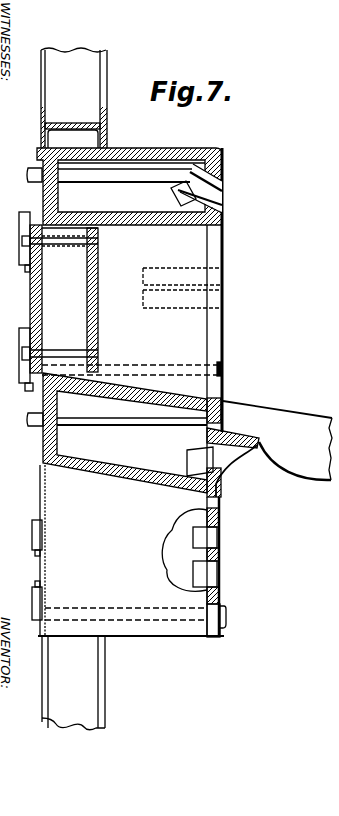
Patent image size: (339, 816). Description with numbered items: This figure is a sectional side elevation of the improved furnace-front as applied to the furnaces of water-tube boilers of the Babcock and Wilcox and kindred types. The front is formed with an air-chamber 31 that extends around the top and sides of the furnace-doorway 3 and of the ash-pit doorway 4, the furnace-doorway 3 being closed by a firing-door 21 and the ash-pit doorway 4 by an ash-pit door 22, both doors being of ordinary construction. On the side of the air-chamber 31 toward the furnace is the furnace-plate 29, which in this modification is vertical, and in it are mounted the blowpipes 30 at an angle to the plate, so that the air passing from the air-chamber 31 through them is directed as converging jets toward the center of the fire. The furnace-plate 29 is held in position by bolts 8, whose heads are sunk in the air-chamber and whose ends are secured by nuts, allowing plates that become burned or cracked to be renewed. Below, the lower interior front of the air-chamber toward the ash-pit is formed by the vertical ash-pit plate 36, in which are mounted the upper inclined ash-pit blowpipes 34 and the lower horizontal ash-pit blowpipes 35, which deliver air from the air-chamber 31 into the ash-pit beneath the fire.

The furnace-plate 29 is at (228, 158).
The blowpipes 30 is at (224, 196).
The air-chamber 31 is at (117, 339).
The bolts 8 is at (141, 176).
The furnace-doorway 3 is at (74, 299).
The firing-door 21 is at (30, 297).
The upper inclined ash-pit blowpipes 34 is at (213, 463).
The ash-pit plate 36 is at (221, 512).
The lower horizontal ash-pit blowpipes 35 is at (213, 540).
The ash-pit doorway 4 is at (132, 551).
The ash-pit door 22 is at (44, 563).